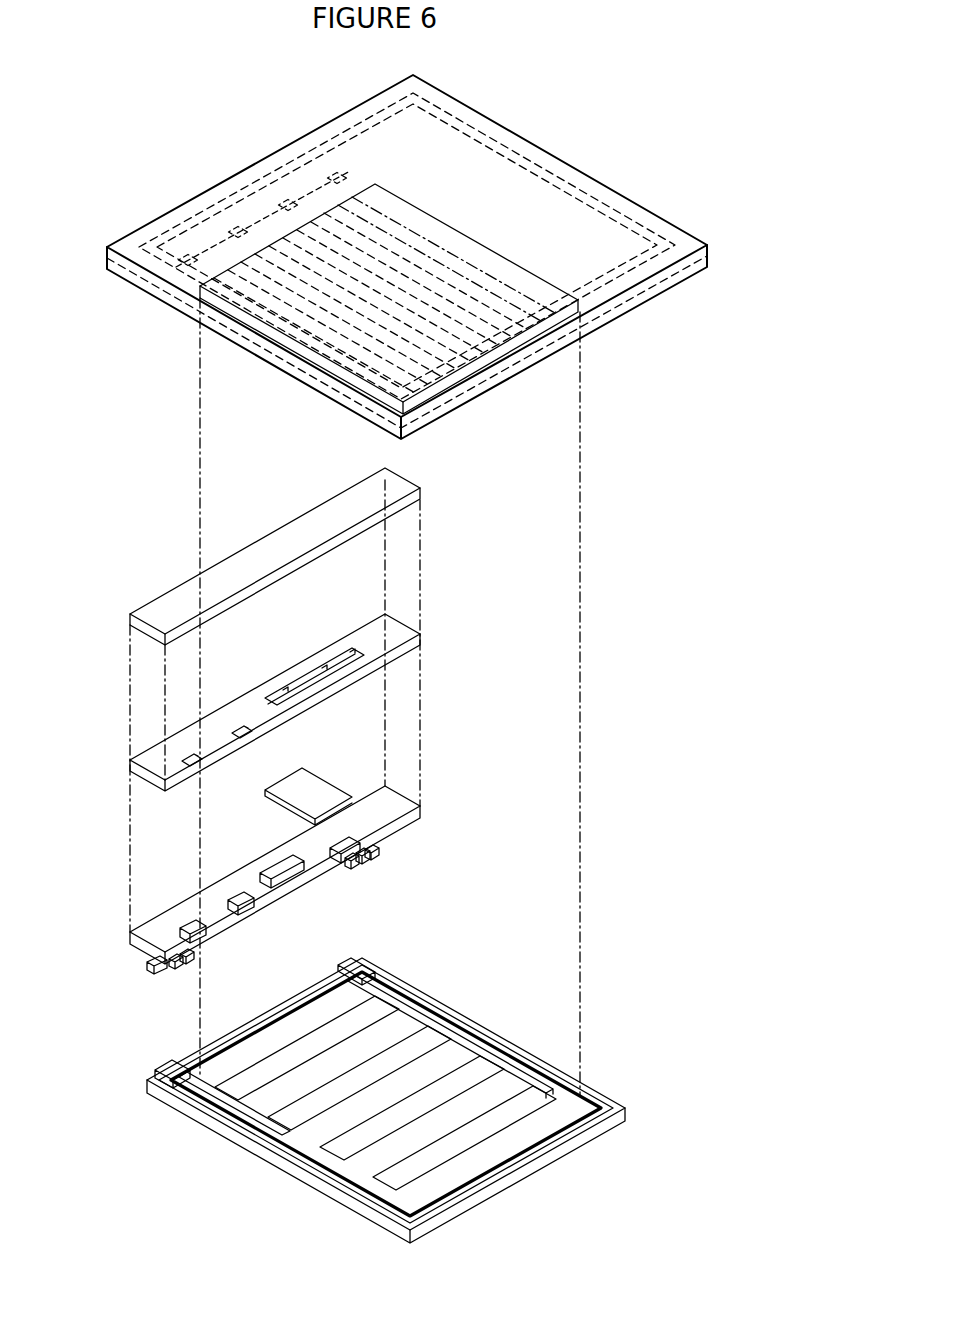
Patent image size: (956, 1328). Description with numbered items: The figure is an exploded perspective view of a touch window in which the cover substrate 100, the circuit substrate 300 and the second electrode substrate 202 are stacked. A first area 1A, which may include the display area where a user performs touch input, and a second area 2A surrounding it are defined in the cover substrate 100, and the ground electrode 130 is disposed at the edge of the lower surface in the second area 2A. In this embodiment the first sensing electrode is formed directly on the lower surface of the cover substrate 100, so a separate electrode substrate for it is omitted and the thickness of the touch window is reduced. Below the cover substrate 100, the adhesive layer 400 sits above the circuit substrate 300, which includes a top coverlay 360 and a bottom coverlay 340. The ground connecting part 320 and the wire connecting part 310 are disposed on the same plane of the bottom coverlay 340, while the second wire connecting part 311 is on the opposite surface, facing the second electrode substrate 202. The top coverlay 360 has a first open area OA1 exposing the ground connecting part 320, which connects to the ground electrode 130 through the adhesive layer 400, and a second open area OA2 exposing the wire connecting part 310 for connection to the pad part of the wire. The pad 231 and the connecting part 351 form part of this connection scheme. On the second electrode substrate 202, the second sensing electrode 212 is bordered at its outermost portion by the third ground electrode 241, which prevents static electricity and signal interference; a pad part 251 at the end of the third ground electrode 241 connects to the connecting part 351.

The cover substrate 100 is at (562, 168).
The ground electrode 130 is at (262, 347).
The second area 2A is at (528, 232).
The first area 1A is at (412, 306).
The adhesive layer 400 is at (163, 604).
The circuit substrate 300 is at (526, 812).
The top coverlay 360 is at (387, 627).
The first open area OA1 is at (317, 673).
The second open area OA2 is at (245, 727).
The bottom coverlay 340 is at (407, 807).
The ground connecting part 320 is at (348, 818).
The wire connecting part 310 is at (192, 915).
The connecting part 351 is at (172, 967).
The second wire connecting part 311 is at (180, 972).
The second electrode substrate 202 is at (510, 1180).
The third ground electrode 241 is at (527, 1060).
The second sensing electrode 212 is at (523, 1118).
The first pad 231 is at (363, 962).
The pad part 251 is at (162, 1087).